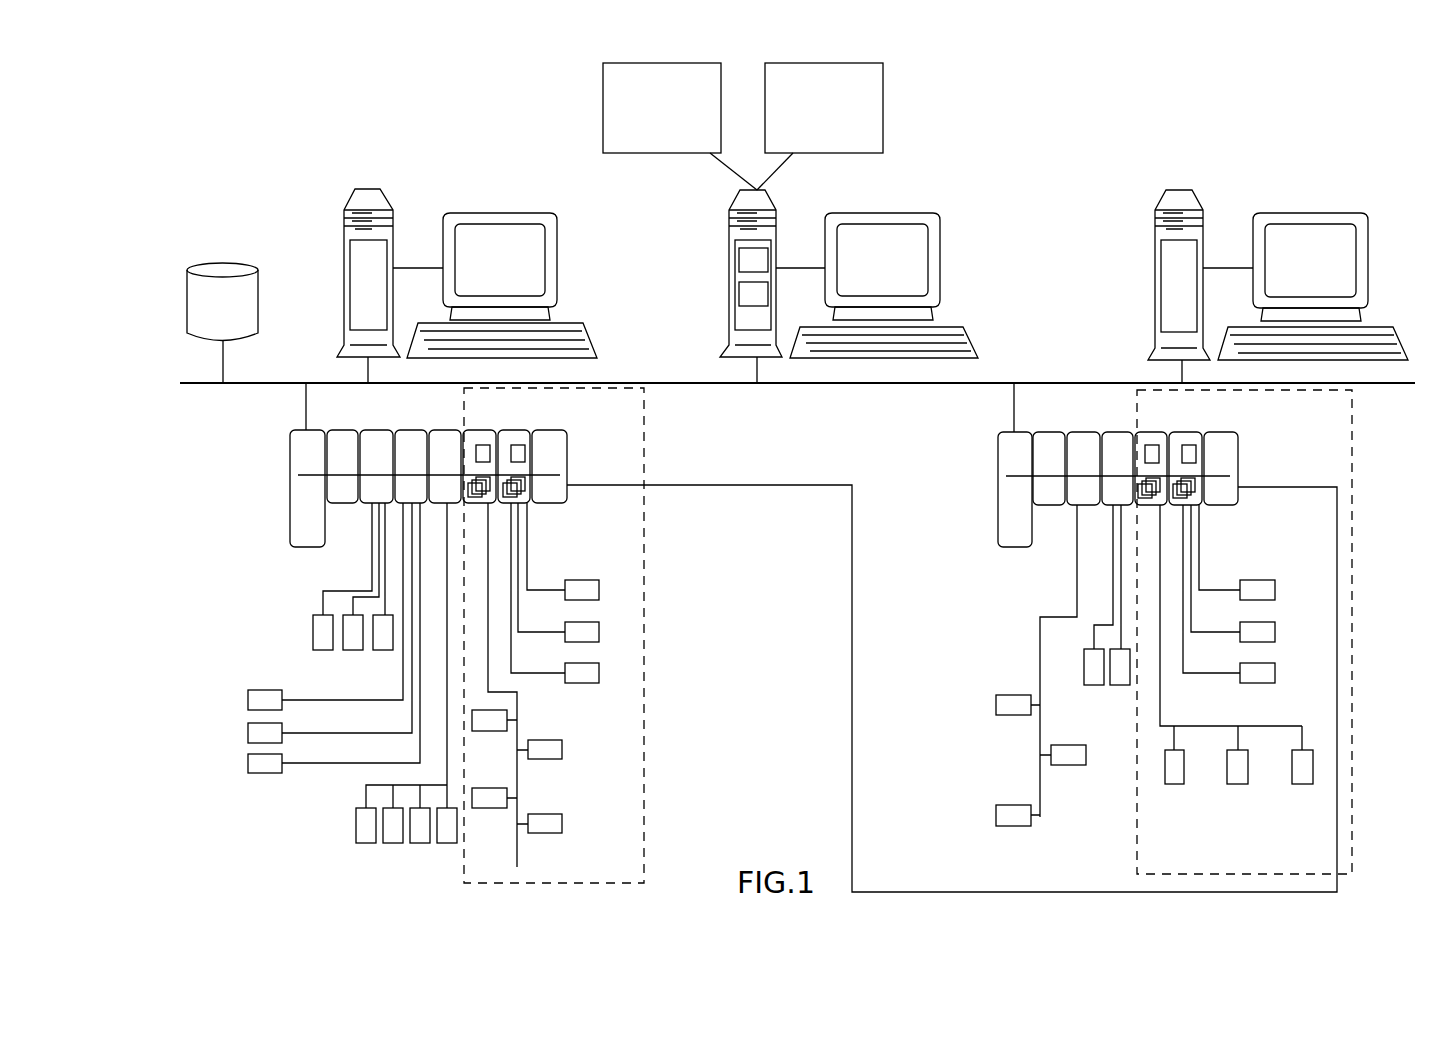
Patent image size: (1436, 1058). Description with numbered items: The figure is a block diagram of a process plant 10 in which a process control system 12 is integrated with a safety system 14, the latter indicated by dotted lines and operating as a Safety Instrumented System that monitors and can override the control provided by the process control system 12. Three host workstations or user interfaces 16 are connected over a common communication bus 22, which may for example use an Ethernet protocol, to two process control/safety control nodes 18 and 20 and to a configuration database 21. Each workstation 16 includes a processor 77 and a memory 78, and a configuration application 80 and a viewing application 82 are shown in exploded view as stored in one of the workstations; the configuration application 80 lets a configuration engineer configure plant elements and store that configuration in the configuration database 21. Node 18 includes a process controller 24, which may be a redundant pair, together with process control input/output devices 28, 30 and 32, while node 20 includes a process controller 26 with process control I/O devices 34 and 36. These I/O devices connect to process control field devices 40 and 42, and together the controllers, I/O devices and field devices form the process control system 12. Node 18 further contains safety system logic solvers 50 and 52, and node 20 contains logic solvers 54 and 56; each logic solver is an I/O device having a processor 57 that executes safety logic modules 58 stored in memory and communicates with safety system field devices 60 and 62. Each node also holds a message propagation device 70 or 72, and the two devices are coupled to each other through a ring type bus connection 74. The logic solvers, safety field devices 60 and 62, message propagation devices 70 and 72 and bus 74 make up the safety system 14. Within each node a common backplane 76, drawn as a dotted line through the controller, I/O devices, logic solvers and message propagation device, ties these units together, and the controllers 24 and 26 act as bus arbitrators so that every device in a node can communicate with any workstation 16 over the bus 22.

The process plant 10 is at (255, 163).
The process control system 12 is at (215, 630).
The safety system 14 is at (645, 778).
The host workstation 16 is at (360, 188).
The process control/safety control node 18 is at (245, 442).
The process control/safety control node 20 is at (1367, 447).
The configuration database 21 is at (260, 280).
The communication bus 22 is at (1048, 383).
The process controller 24 is at (307, 547).
The process controller 26 is at (1014, 547).
The process control system I/O device 28 is at (376, 430).
The process control system I/O device 30 is at (413, 430).
The process control system I/O device 32 is at (446, 430).
The process control system I/O device 34 is at (1083, 432).
The process control system I/O device 36 is at (1118, 432).
The field device 40 is at (325, 650).
The field device 42 is at (366, 843).
The safety system logic solver 50 is at (478, 430).
The safety system logic solver 52 is at (516, 430).
The safety system logic solver 54 is at (1163, 432).
The safety system logic solver 56 is at (1200, 432).
The processor 57 is at (488, 447).
The safety logic module 58 is at (478, 498).
The safety system field device 60 is at (599, 590).
The safety system field device 62 is at (490, 731).
The message propagation device 70 is at (548, 503).
The message propagation device 72 is at (1232, 432).
The ring type bus connection 74 is at (850, 668).
The common backplane 76 is at (312, 475).
The processor 77 is at (739, 300).
The memory 78 is at (739, 255).
The configuration application 80 is at (603, 85).
The viewing application 82 is at (883, 85).